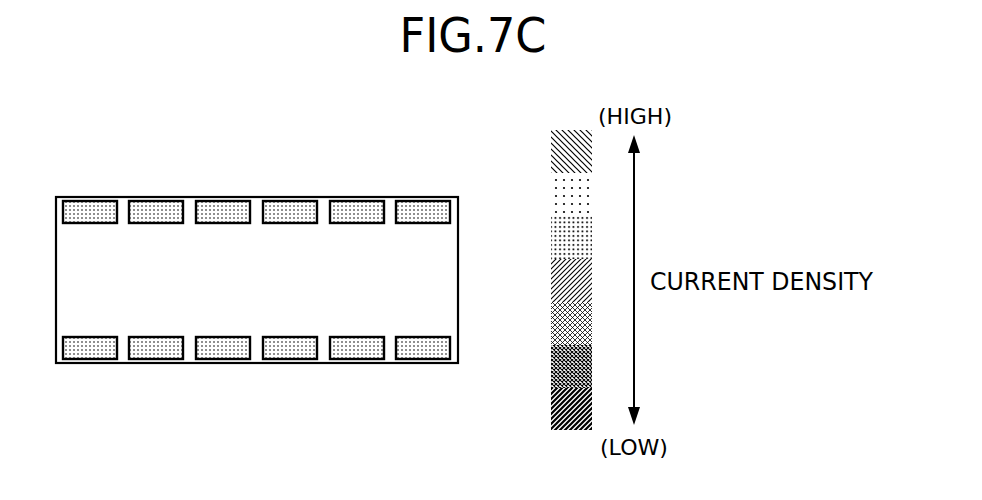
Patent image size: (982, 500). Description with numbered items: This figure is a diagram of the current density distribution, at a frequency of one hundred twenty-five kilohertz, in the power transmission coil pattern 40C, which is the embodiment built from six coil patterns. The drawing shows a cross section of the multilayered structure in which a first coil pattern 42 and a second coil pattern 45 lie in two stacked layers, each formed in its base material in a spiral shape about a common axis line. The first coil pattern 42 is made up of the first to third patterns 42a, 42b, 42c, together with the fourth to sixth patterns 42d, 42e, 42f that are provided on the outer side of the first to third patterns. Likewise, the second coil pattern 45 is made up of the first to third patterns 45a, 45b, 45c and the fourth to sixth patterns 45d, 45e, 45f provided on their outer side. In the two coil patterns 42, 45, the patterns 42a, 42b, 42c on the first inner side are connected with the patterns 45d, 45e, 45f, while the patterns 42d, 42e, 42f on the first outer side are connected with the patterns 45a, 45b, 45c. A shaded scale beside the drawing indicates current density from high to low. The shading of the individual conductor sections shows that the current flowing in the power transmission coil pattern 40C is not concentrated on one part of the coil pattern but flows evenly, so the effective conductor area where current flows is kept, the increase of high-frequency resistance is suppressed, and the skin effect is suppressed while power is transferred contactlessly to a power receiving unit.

The power transmission coil pattern 40C is at (258, 156).
The first coil pattern 42 is at (295, 184).
The first pattern 42a is at (89, 201).
The second pattern 42b is at (155, 201).
The third pattern 42c is at (222, 201).
The fourth pattern 42d is at (289, 201).
The fifth pattern 42e is at (356, 201).
The sixth pattern 42f is at (422, 201).
The second coil pattern 45 is at (295, 365).
The first pattern 45a is at (90, 359).
The second pattern 45b is at (156, 359).
The third pattern 45c is at (223, 359).
The fourth pattern 45d is at (290, 359).
The fifth pattern 45e is at (357, 359).
The sixth pattern 45f is at (423, 359).